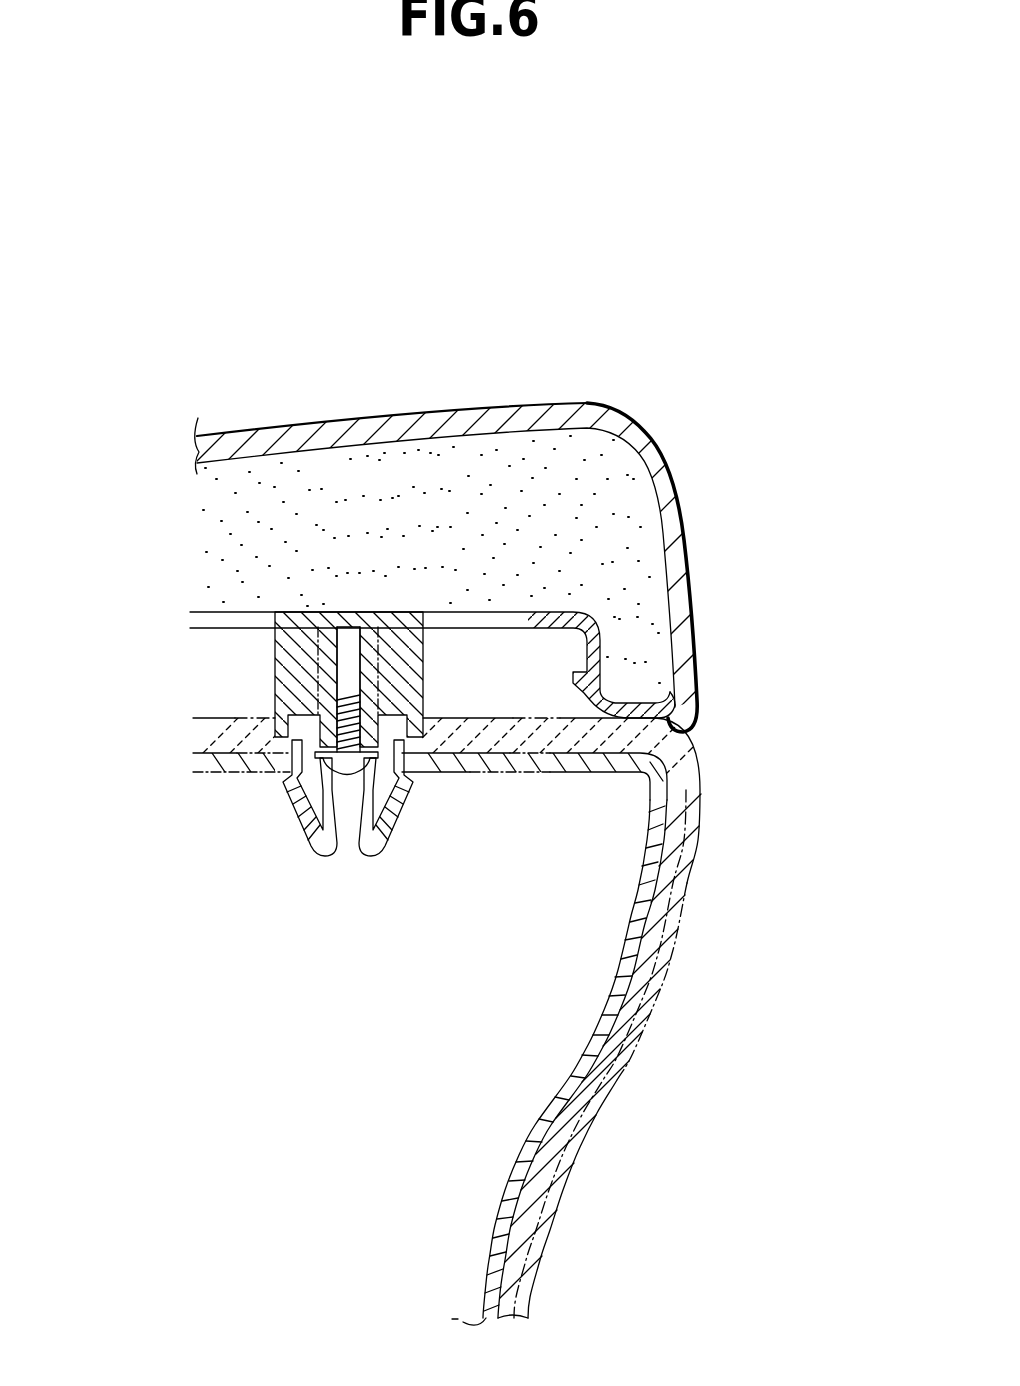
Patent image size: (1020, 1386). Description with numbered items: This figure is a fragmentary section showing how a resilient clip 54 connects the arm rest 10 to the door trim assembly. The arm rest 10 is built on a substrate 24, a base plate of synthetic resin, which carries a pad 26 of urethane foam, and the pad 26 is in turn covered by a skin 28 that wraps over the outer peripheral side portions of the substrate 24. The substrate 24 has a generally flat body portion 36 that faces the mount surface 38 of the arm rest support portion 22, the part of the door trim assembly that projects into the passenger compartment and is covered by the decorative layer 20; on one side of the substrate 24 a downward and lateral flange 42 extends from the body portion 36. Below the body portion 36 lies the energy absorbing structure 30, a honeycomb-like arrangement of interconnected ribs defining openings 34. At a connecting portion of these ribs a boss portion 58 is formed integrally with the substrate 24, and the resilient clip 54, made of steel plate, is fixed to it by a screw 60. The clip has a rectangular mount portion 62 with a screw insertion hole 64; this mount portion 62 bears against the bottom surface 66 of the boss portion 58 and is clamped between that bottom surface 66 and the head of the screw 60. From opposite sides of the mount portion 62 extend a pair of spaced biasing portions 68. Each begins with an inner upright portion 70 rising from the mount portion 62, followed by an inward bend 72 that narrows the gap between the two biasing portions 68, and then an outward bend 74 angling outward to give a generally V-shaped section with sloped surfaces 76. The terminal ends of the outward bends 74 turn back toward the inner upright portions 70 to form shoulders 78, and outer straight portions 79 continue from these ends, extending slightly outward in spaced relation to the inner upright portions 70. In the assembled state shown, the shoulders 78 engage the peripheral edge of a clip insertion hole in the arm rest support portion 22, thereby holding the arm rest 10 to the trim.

The arm rest 10 is at (361, 249).
The decorative layer 20 is at (665, 956).
The arm rest support portion 22 is at (688, 817).
The substrate 24 is at (547, 612).
The pad 26 is at (528, 437).
The skin 28 is at (637, 423).
The energy absorbing structure 30 is at (437, 591).
The openings 34 is at (484, 622).
The body portion 36 is at (340, 695).
The mount surface 38 is at (558, 716).
The downward and lateral flange 42 is at (620, 677).
The resilient clip 54 is at (364, 871).
The boss portion 58 is at (273, 663).
The screw 60 is at (347, 776).
The mount portion 62 is at (318, 740).
The screw insertion hole 64 is at (338, 687).
The bottom surface 66 is at (381, 745).
The biasing portions 68 is at (321, 852).
The inner upright portions 70 is at (297, 793).
The inward bends 72 is at (310, 812).
The outward bends 74 is at (322, 822).
The sloped surfaces 76 is at (296, 800).
The shoulders 78 is at (287, 773).
The outer straight portions 79 is at (283, 748).